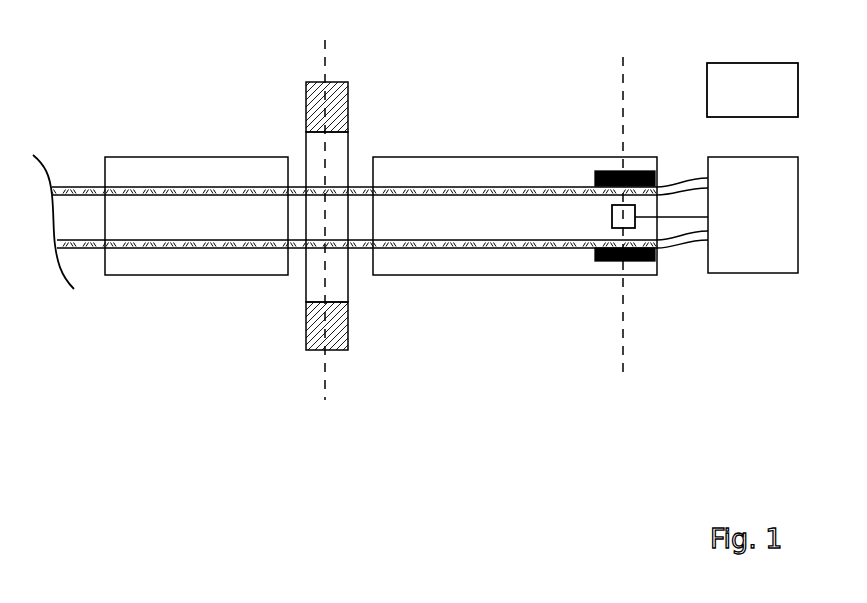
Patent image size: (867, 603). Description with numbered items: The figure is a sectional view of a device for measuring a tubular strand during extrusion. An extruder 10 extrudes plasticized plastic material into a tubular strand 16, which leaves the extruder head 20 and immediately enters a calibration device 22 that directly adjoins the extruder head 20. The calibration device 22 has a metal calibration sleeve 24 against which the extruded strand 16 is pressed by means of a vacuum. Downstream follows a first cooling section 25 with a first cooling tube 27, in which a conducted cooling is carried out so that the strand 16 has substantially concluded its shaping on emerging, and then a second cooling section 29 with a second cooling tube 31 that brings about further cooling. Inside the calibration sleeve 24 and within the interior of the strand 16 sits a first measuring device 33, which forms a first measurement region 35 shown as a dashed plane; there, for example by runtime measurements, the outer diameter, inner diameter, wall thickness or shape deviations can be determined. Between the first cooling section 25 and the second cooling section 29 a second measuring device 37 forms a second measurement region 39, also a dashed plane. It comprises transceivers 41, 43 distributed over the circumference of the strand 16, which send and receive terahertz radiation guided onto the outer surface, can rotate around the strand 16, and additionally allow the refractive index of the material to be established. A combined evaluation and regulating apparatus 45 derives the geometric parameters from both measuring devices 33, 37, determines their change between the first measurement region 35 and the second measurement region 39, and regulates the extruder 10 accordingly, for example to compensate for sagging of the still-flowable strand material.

The extruder 10 is at (754, 270).
The tubular strand 16 is at (683, 180).
The extruder head 20 is at (708, 265).
The calibration device 22 is at (601, 160).
The calibration sleeve 24 is at (602, 261).
The first cooling section 25 is at (515, 212).
The first cooling tube 27 is at (465, 275).
The second cooling section 29 is at (188, 222).
The second cooling tube 31 is at (170, 275).
The first measuring device 33 is at (618, 261).
The first measurement region 35 is at (623, 355).
The second measuring device 37 is at (284, 201).
The second measurement region 39 is at (330, 374).
The transceiver 41 is at (338, 82).
The transceiver 43 is at (312, 337).
The combined evaluation and regulating apparatus 45 is at (752, 90).